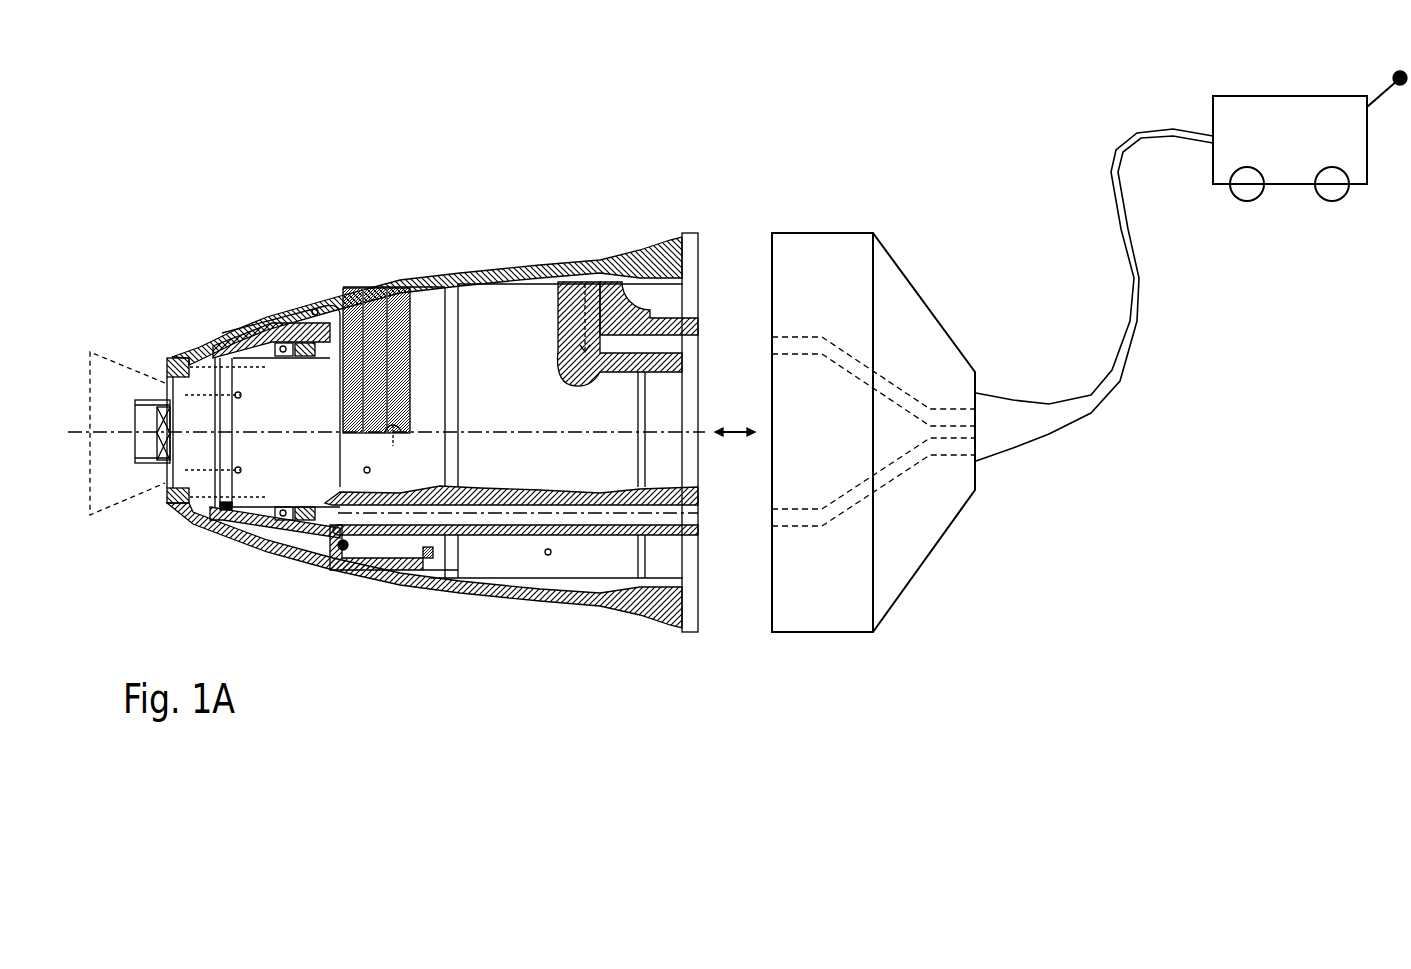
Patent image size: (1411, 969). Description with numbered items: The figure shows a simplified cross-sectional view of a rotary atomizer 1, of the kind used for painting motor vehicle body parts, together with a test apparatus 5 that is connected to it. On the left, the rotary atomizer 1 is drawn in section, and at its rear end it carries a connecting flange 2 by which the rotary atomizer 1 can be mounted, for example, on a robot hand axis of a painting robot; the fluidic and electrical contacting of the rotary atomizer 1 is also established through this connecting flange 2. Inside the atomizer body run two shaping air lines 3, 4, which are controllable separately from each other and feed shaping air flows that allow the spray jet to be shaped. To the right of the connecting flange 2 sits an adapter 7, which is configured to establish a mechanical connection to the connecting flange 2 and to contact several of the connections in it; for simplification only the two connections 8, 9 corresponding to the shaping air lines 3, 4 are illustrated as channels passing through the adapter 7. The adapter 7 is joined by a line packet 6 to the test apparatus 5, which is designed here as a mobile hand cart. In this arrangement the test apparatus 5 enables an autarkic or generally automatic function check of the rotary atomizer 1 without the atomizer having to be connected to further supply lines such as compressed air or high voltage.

The rotary atomizer 1 is at (212, 313).
The connecting flange 2 is at (700, 590).
The shaping air line 3 is at (587, 302).
The shaping air line 4 is at (618, 518).
The test apparatus 5 is at (1224, 96).
The line packet 6 is at (1107, 156).
The adapter 7 is at (822, 224).
The connection 8 is at (902, 393).
The connection 9 is at (905, 472).